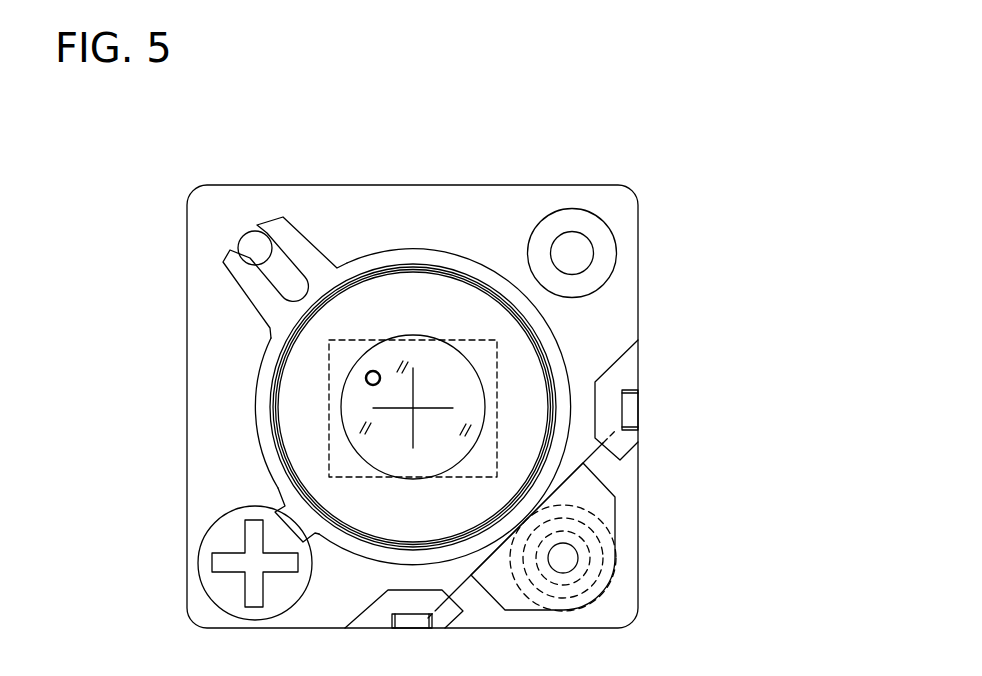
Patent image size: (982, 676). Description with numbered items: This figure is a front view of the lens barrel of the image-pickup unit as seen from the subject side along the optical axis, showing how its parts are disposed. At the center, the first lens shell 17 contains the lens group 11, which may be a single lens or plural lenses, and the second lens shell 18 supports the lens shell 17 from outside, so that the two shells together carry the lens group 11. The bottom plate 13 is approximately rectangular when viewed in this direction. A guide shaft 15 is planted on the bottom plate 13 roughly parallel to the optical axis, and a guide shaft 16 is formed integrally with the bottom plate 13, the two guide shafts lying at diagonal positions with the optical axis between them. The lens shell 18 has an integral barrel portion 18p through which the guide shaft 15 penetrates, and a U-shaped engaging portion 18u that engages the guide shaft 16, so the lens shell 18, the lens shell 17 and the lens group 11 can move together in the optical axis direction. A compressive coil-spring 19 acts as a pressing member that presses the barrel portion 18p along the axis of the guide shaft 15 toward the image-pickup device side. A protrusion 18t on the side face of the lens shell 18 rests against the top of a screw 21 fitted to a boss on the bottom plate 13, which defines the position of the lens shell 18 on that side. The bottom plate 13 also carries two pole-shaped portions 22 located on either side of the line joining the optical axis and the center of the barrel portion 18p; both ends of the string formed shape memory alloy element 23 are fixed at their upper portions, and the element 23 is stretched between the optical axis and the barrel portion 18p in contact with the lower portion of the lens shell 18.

The lens group 11 is at (462, 372).
The bottom plate 13 is at (389, 197).
The guide shaft 15 is at (568, 553).
The guide shaft 16 is at (255, 248).
The first lens shell 17 is at (457, 293).
The second lens shell 18 is at (257, 428).
The barrel portion 18p is at (610, 567).
The protrusion 18t is at (305, 523).
The engaging portion 18u is at (273, 222).
The compressive coil-spring 19 is at (565, 597).
The screw 21 is at (218, 533).
The pole-shaped portions 22 is at (632, 363).
The string formed shape memory alloy element 23 is at (592, 442).